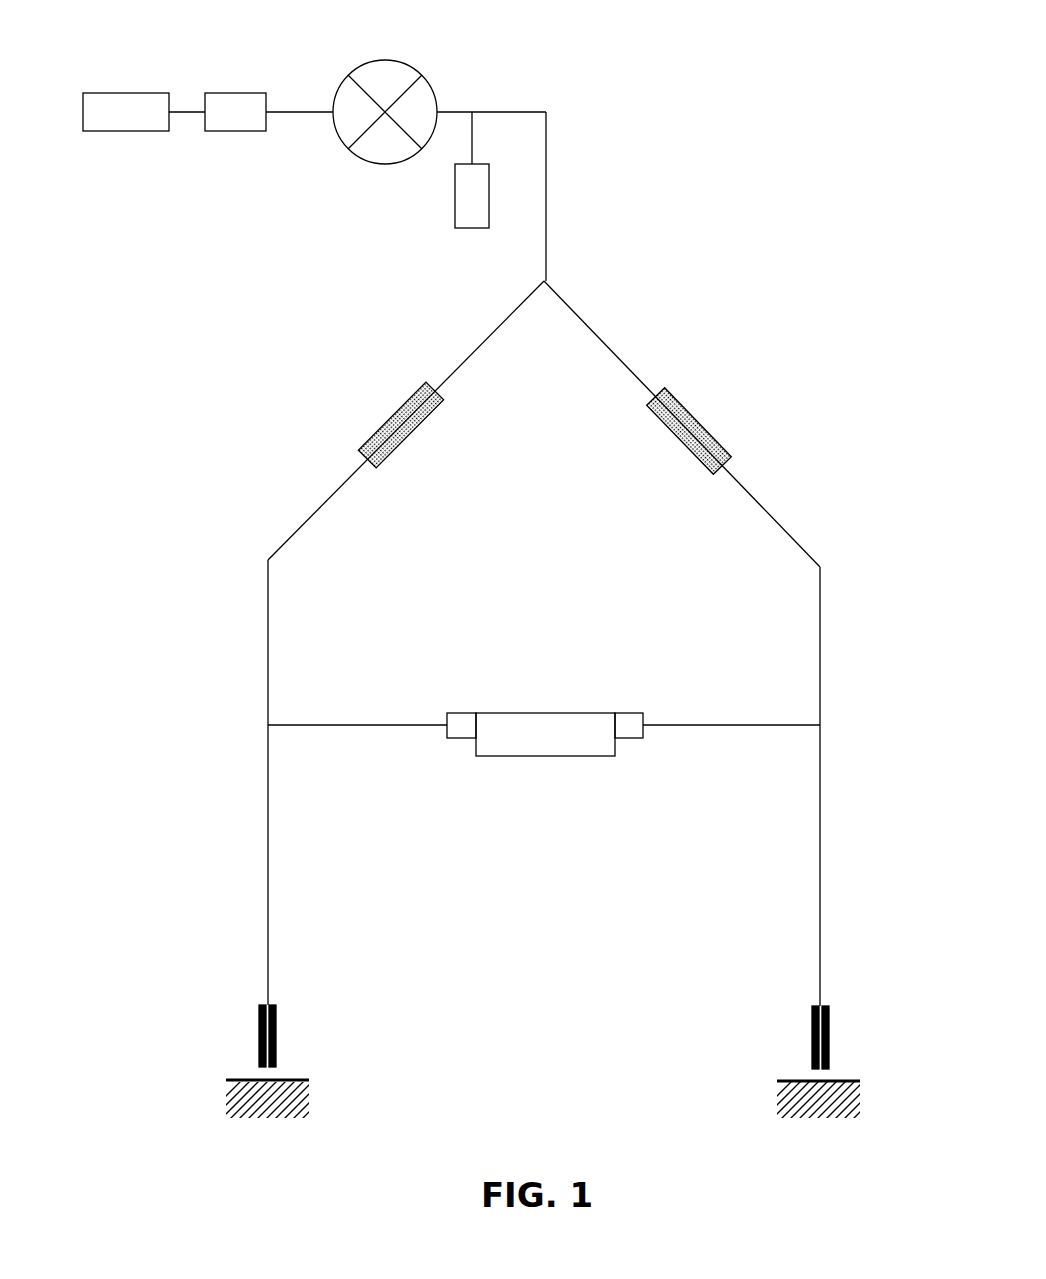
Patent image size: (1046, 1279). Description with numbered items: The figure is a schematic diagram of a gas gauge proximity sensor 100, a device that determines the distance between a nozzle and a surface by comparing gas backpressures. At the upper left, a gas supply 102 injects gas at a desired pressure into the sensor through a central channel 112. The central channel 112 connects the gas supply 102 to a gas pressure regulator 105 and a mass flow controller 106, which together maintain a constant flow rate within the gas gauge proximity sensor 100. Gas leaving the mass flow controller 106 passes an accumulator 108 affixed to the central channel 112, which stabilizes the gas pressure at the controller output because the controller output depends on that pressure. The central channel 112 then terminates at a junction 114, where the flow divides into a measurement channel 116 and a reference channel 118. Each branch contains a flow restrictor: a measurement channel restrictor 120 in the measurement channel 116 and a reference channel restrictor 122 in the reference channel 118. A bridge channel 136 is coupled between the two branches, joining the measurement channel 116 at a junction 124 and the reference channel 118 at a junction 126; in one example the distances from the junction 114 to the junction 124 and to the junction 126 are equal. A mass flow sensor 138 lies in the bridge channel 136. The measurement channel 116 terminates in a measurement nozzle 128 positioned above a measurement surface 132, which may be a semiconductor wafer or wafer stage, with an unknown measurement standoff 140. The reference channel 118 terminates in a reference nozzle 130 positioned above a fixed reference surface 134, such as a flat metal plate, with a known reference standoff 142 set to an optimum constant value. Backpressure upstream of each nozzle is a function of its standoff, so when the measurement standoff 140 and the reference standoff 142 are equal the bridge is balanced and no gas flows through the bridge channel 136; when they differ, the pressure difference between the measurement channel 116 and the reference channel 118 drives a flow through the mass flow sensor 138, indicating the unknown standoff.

The gas gauge proximity sensor 100 is at (848, 27).
The gas supply 102 is at (128, 93).
The gas pressure regulator 105 is at (233, 93).
The mass flow controller 106 is at (382, 61).
The accumulator 108 is at (480, 228).
The central channel 112 is at (278, 110).
The junction 114 is at (580, 250).
The measurement channel 116 is at (472, 353).
The reference channel 118 is at (580, 319).
The measurement channel restrictor 120 is at (428, 426).
The reference channel restrictor 122 is at (714, 446).
The junction 124 is at (266, 724).
The junction 126 is at (822, 724).
The measurement nozzle 128 is at (258, 1018).
The reference nozzle 130 is at (830, 1018).
The measurement surface 132 is at (308, 1079).
The reference surface 134 is at (858, 1080).
The bridge channel 136 is at (355, 724).
The mass flow sensor 138 is at (557, 713).
The measurement standoff 140 is at (267, 1077).
The reference standoff 142 is at (817, 1077).